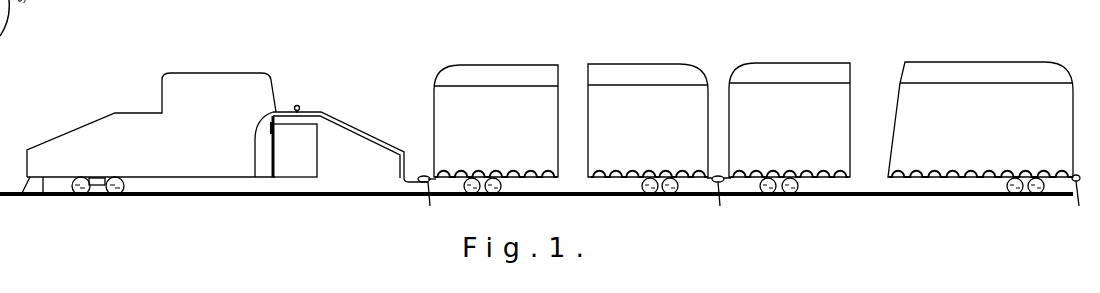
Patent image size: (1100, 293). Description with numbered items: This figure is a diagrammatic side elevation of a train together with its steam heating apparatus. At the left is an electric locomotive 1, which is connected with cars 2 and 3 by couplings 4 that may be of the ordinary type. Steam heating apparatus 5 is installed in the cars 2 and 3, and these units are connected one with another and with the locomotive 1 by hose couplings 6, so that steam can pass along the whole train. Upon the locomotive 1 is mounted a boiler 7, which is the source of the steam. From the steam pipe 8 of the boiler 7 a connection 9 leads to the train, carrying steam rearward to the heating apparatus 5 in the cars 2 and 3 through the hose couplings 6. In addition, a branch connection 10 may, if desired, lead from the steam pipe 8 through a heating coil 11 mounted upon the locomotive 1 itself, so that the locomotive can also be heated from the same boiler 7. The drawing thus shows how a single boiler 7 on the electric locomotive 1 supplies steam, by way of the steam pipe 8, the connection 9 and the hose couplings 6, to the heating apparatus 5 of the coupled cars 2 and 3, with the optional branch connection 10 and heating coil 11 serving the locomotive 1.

The electric locomotive 1 is at (224, 73).
The car 2 is at (590, 125).
The car 3 is at (891, 140).
The coupling 4 is at (422, 176).
The steam heating apparatus 5 is at (508, 172).
The hose coupling 6 is at (754, 202).
The boiler 7 is at (312, 141).
The steam pipe 8 is at (297, 102).
The connection 9 is at (389, 145).
The branch connection 10 is at (271, 128).
The heating coil 11 is at (271, 150).